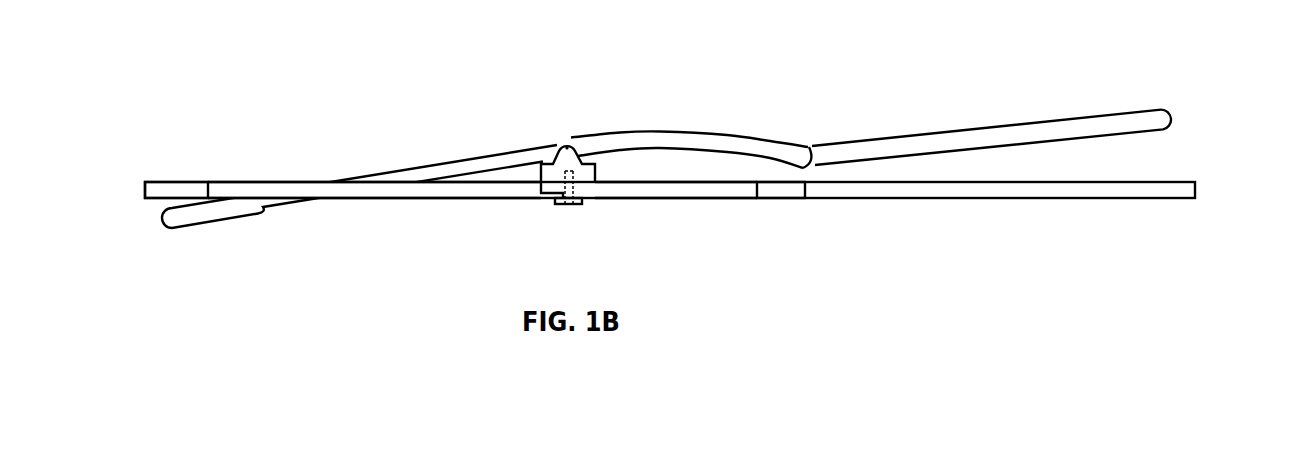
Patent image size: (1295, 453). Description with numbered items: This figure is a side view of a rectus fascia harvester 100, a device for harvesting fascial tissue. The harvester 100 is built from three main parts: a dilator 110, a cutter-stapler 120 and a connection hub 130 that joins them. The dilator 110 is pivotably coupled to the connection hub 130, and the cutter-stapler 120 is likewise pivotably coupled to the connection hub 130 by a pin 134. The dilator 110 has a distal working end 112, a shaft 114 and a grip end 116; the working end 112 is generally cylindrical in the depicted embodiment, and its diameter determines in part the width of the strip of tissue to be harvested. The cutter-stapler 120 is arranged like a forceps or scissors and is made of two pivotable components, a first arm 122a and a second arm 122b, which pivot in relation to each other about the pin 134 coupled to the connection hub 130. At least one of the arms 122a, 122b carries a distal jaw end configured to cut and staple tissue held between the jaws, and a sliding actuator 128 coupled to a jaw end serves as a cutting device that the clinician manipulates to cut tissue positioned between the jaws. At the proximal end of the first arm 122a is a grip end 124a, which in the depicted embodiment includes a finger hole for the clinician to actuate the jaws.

The rectus fascia harvester 100 is at (227, 123).
The dilator 110 is at (716, 174).
The distal working end 112 is at (978, 127).
The shaft 114 is at (706, 132).
The grip end 116 is at (212, 228).
The cutter-stapler 120 is at (656, 206).
The first arm 122a is at (432, 198).
The second arm 122b is at (672, 198).
The proximal grip end 124a is at (144, 185).
The sliding actuator 128 is at (800, 198).
The connection hub 130 is at (556, 144).
The pin 134 is at (580, 204).